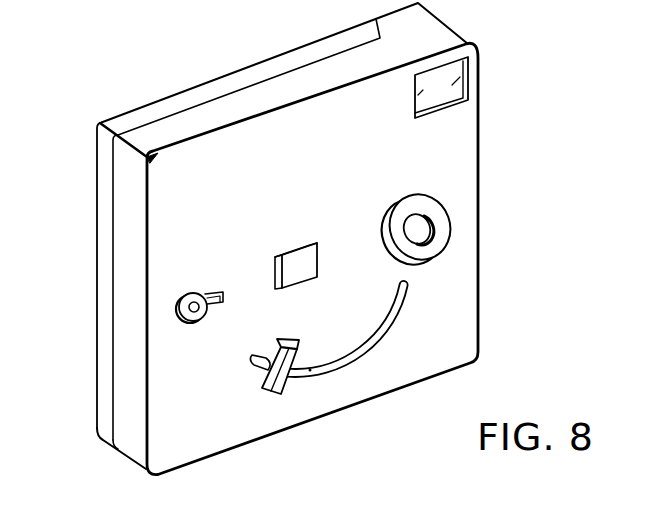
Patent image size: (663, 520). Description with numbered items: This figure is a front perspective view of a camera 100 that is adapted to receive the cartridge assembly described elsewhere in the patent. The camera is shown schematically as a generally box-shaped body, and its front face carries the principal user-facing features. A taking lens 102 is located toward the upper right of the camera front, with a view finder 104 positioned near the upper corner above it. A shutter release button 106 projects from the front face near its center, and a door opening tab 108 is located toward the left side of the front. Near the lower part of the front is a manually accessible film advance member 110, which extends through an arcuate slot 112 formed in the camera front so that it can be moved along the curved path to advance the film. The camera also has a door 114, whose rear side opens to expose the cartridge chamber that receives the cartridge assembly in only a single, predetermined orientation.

The camera 100 is at (178, 69).
The taking lens 102 is at (426, 236).
The view finder 104 is at (452, 83).
The shutter release button 106 is at (304, 257).
The door opening tab 108 is at (190, 318).
The film advance member 110 is at (257, 392).
The arcuate slot 112 is at (312, 370).
The door 114 is at (117, 118).